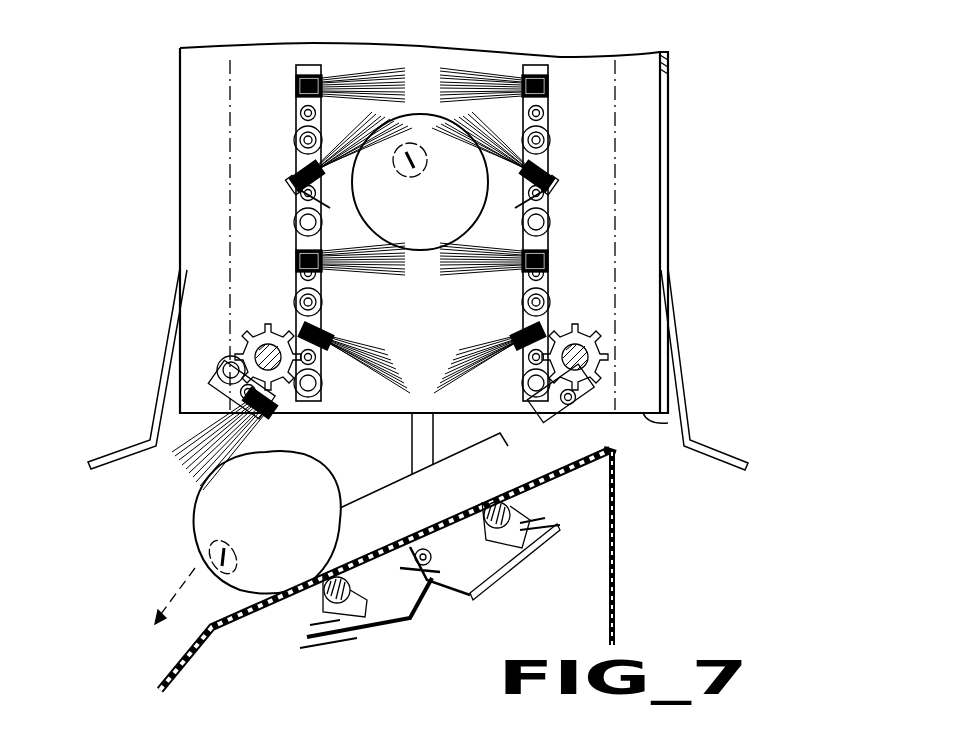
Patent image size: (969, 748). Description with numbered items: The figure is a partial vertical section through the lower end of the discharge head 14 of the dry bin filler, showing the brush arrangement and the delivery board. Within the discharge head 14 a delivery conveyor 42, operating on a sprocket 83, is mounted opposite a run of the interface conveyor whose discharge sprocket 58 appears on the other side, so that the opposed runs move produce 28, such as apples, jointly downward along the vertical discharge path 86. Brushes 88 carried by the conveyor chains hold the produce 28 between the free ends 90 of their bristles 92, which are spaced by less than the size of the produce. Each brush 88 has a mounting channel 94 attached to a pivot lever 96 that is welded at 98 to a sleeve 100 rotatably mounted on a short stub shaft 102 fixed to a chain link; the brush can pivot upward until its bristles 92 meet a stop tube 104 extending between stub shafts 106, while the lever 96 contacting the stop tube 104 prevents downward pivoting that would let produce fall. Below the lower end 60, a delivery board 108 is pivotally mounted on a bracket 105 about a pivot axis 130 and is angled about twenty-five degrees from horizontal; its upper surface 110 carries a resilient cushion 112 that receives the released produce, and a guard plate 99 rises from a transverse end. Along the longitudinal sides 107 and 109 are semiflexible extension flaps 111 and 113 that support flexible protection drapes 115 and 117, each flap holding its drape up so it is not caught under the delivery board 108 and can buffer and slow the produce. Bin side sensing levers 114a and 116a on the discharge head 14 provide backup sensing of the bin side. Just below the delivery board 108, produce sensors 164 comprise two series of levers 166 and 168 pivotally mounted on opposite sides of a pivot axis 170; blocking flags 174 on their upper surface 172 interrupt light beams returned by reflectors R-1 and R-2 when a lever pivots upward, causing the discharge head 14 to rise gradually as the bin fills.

The discharge head 14 is at (676, 100).
The delivery conveyor 42 is at (620, 182).
The produce 28 is at (438, 141).
The discharge sprocket 58 is at (270, 322).
The sprocket 83 is at (580, 322).
The lower end 60 is at (668, 416).
The vertical discharge path 86 is at (422, 375).
The brush 88 is at (461, 70).
The free ends of the brush bristles 90 is at (444, 80).
The brush bristles 92 is at (352, 80).
The mounting channel 94 is at (298, 82).
The pivot lever 96 is at (298, 101).
The weld 98 is at (298, 196).
The sleeve 100 is at (298, 208).
The stub shaft 102 is at (298, 114).
The stop tube 104 is at (294, 140).
The stub shafts 106 is at (300, 148).
The bracket 105 is at (412, 452).
The guard plate 99 is at (478, 452).
The longitudinal side 107 is at (265, 592).
The delivery board 108 is at (503, 487).
The longitudinal side 109 is at (552, 458).
The upper surface 110 is at (424, 470).
The extension flap 111 is at (258, 616).
The resilient cushion 112 is at (372, 552).
The extension flap 113 is at (616, 452).
The bin side sensing lever 114a is at (160, 398).
The bin side sensing lever 116a is at (686, 321).
The protection drape 115 is at (195, 647).
The protection drape 117 is at (618, 577).
The pivot axis 130 is at (420, 548).
The reflector R-1 is at (512, 505).
The reflector R-2 is at (352, 586).
The produce sensor 164 is at (510, 580).
The lever 166 is at (412, 627).
The lever 168 is at (540, 557).
The pivot axis 170 is at (437, 595).
The upper surface 172 is at (540, 538).
The blocking flag 174 is at (548, 518).